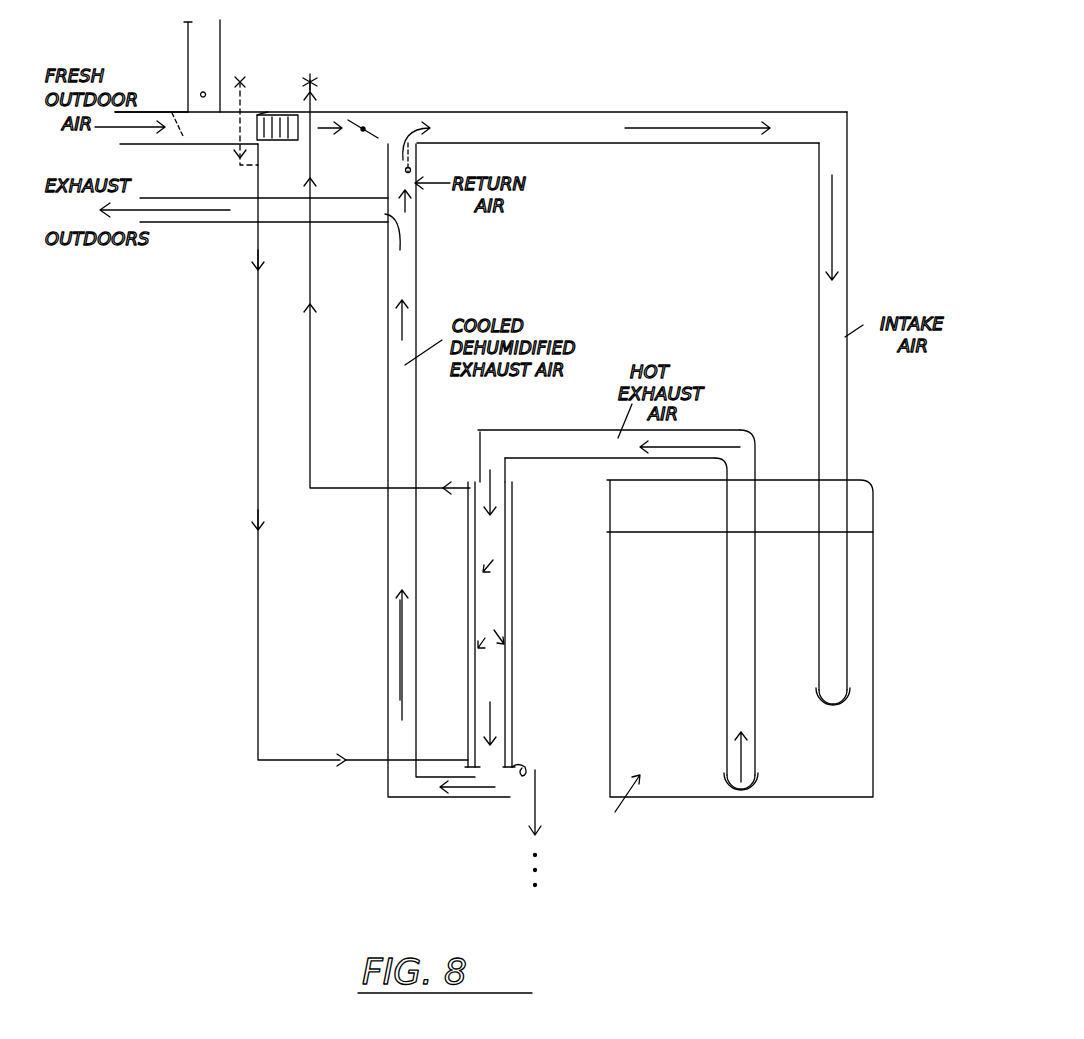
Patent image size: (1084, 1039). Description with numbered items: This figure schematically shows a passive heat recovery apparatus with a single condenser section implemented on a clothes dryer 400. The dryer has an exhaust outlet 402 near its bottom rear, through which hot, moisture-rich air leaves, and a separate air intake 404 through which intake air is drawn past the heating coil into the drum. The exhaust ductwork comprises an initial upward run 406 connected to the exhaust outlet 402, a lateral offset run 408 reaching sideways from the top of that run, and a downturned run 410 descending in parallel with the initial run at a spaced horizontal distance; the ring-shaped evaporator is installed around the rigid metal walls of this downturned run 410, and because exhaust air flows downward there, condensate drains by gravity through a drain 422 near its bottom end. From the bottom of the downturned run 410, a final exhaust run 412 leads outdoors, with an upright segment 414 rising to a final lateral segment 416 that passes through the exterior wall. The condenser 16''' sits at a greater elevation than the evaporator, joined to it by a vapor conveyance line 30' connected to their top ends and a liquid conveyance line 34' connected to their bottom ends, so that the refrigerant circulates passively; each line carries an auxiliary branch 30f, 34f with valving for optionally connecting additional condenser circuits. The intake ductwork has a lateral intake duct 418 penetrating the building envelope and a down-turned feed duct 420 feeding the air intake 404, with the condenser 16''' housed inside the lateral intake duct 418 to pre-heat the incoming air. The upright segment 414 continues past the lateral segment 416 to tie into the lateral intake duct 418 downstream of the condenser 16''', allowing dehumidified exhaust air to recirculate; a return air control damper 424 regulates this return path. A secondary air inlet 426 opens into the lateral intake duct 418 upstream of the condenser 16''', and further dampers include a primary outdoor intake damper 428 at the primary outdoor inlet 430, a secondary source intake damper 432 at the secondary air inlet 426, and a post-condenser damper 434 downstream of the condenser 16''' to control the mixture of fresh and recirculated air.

The condenser 16''' is at (315, 72).
The vapor conveyance line 30' is at (386, 284).
The auxiliary branch 30f is at (313, 107).
The liquid conveyance line 34' is at (328, 455).
The auxiliary branch 34f is at (258, 92).
The clothes dryer 400 is at (735, 661).
The exhaust outlet 402 is at (740, 787).
The air intake 404 is at (842, 692).
The initial upward run 406 is at (735, 582).
The lateral offset run 408 is at (583, 440).
The downturned run 410 is at (478, 452).
The final exhaust run 412 is at (380, 556).
The upright segment 414 is at (402, 509).
The final lateral segment 416 is at (240, 215).
The lateral intake duct 418 is at (492, 118).
The down-turned feed duct 420 is at (830, 310).
The drain 422 is at (515, 762).
The return air control damper 424 is at (405, 178).
The secondary air inlet 426 is at (212, 42).
The primary outdoor intake damper 428 is at (174, 113).
The primary outdoor inlet 430 is at (145, 142).
The secondary source intake damper 432 is at (213, 87).
The post-condenser damper 434 is at (352, 122).